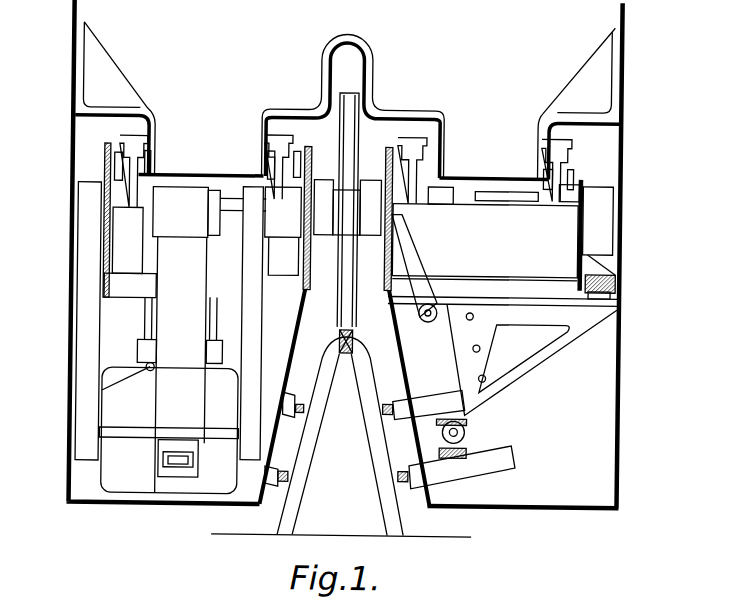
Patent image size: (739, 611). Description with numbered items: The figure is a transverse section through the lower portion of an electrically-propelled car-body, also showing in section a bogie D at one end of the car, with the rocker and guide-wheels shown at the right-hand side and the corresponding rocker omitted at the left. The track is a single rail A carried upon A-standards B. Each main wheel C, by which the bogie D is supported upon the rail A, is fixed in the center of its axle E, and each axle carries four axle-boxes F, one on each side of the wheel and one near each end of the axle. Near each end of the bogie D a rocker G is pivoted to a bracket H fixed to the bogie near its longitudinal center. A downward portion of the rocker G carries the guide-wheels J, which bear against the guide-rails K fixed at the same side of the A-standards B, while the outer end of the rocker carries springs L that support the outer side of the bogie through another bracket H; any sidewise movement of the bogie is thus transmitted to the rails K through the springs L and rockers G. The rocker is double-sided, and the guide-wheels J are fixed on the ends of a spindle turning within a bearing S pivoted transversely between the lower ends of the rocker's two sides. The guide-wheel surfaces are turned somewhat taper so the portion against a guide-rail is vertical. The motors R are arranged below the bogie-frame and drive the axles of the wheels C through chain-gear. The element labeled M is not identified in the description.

The single rail A is at (341, 333).
The A-standards B is at (345, 412).
The main wheel C is at (348, 141).
The bogie D is at (485, 242).
The axle E is at (369, 201).
The axle-box F is at (145, 177).
The rocker G is at (531, 360).
The bracket H is at (413, 269).
The guide-wheels J is at (288, 405).
The guide-rails K is at (384, 409).
The springs L is at (502, 291).
The block M is at (599, 243).
The motors R is at (169, 428).
The bearing S is at (467, 438).